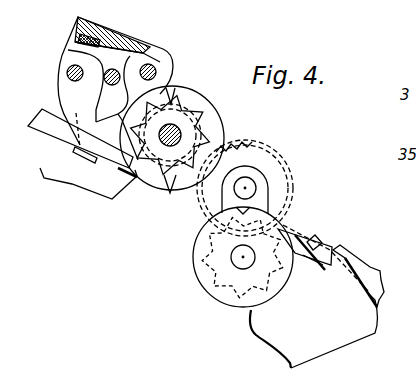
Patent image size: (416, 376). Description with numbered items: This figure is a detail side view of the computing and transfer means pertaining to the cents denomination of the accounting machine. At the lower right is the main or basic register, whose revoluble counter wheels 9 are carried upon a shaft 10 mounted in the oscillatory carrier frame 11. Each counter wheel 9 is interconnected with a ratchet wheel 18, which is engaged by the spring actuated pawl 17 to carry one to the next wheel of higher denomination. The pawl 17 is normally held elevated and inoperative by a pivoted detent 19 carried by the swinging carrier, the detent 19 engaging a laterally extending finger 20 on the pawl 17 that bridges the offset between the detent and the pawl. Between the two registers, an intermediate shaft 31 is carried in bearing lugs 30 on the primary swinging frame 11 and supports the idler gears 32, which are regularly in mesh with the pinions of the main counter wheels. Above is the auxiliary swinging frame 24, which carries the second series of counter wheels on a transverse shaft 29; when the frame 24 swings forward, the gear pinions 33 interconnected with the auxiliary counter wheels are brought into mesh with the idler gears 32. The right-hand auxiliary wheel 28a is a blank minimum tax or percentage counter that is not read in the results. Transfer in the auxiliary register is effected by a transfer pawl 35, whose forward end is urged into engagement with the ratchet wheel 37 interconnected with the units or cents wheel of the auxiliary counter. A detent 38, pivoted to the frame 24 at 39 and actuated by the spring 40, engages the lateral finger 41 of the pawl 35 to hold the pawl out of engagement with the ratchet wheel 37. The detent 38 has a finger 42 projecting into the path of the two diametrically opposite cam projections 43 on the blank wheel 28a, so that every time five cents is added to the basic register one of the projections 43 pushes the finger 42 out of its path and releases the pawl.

The counter wheels 9 is at (283, 219).
The shaft 10 is at (232, 257).
The oscillatory carrier frame 11 is at (365, 328).
The spring actuated pawl 17 is at (363, 278).
The ratchet wheel 18 is at (272, 280).
The pivoted detent 19 is at (318, 272).
The lateral finger 20 is at (316, 243).
The auxiliary swinging frame 24 is at (123, 43).
The minimum tax or percentage counter wheel 28a is at (212, 121).
The transverse shaft 29 is at (200, 118).
The bearing lugs 30 is at (268, 178).
The intermediate shaft 31 is at (246, 188).
The idler gears 32 is at (247, 149).
The gear pinions 33 is at (178, 128).
The transfer pawl 35 is at (45, 126).
The ratchet wheel 37 is at (163, 163).
The detent 38 is at (95, 101).
The pivot 39 is at (85, 62).
The spring 40 is at (80, 38).
The lateral finger 41 is at (81, 158).
The finger 42 is at (118, 113).
The cam projections 43 is at (168, 90).